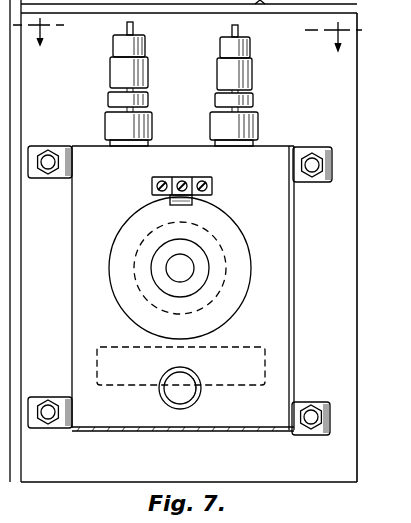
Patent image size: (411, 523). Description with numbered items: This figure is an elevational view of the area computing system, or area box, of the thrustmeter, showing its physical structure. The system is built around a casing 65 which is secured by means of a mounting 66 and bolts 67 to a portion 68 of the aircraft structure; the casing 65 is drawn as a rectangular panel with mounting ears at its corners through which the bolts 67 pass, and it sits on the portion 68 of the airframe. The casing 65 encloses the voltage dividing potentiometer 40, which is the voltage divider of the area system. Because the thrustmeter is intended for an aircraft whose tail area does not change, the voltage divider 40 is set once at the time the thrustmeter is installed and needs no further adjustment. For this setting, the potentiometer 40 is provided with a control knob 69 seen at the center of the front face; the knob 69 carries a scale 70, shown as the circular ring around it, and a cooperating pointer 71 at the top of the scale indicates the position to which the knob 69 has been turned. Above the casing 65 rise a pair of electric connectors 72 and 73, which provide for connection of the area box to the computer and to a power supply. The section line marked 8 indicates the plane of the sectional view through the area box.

The section line 8- 8 is at (187, 34).
The voltage divider 40 is at (227, 261).
The casing 65 is at (296, 311).
The mounting 66 is at (40, 146).
The bolts 67 is at (47, 172).
The portion of the aircraft structure 68 is at (183, 445).
The control knob 69 is at (180, 268).
The scale 70 is at (245, 228).
The pointer 71 is at (195, 204).
The electric connector 72 is at (143, 45).
The electric connector 73 is at (220, 52).